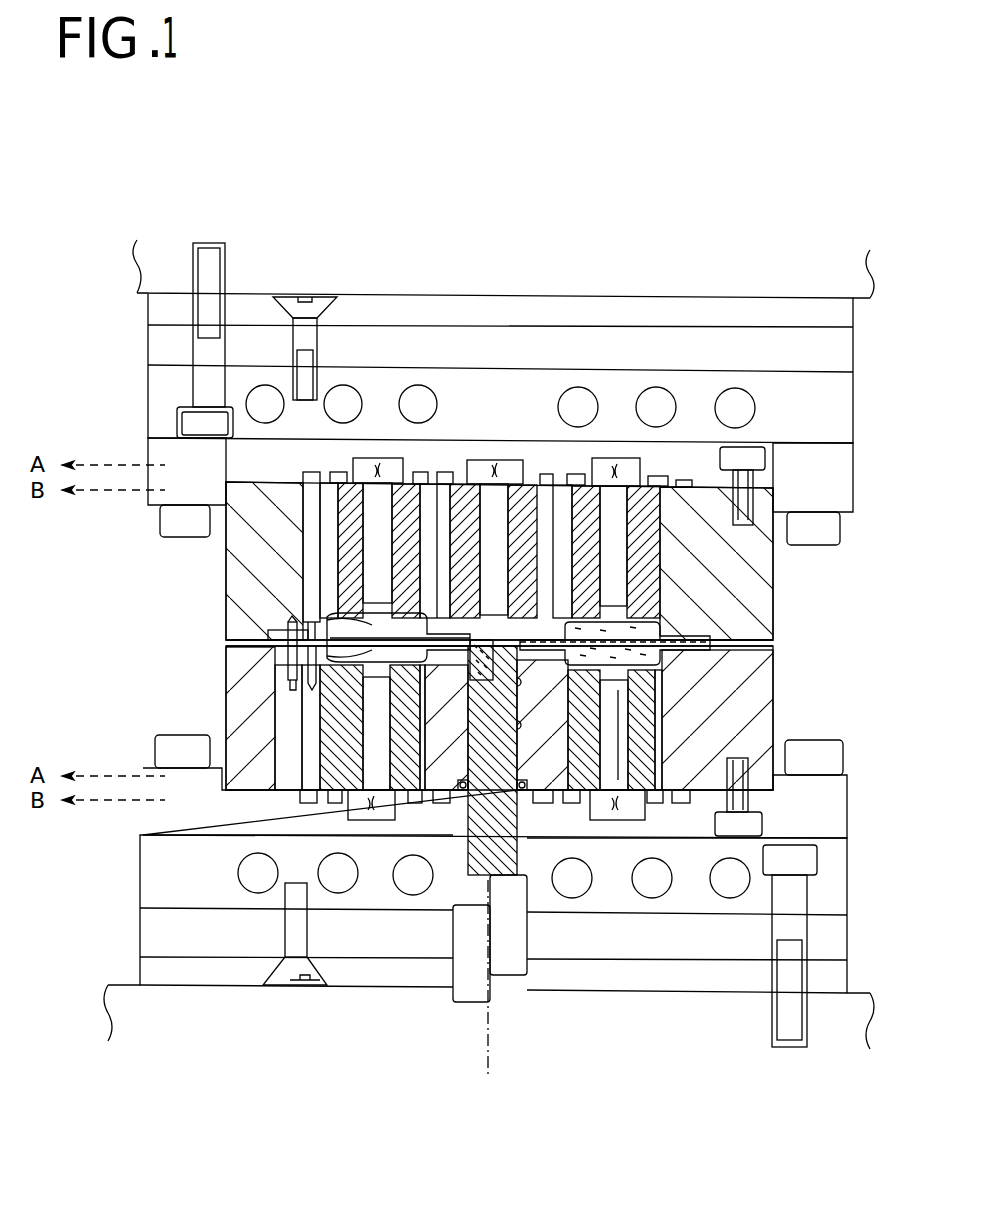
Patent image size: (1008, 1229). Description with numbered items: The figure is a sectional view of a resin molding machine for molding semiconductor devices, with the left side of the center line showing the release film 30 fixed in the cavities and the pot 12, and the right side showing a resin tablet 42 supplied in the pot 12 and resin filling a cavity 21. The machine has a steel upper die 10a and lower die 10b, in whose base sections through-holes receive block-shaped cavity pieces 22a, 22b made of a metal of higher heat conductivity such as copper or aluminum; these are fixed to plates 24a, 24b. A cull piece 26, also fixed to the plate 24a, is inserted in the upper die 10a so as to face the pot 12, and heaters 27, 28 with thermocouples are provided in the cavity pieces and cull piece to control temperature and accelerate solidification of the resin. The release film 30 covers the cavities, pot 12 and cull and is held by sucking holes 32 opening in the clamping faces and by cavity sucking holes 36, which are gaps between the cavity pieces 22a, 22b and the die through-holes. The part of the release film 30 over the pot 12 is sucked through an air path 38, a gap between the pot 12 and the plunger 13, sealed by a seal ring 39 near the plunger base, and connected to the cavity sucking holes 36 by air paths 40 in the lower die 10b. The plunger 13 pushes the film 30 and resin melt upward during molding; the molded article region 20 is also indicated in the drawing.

The upper die 10a is at (240, 594).
The lower die 10b is at (240, 688).
The pot 12 is at (505, 655).
The plunger 13 is at (477, 893).
The first molded article cavity 20 is at (330, 648).
The cavity 21 is at (640, 631).
The cavity piece 22a is at (352, 482).
The cavity piece 22b is at (346, 770).
The plate 24a is at (175, 452).
The plate 24b is at (160, 808).
The cull piece 26 is at (462, 495).
The heater 27 is at (405, 495).
The heater 28 is at (528, 495).
The release film 30 is at (285, 625).
The sucking hole 32 is at (310, 553).
The cavity sucking hole 36 is at (345, 512).
The air path 38 is at (517, 740).
The seal ring 39 is at (530, 782).
The air path 40 is at (553, 770).
The resin tablet 42 is at (500, 620).